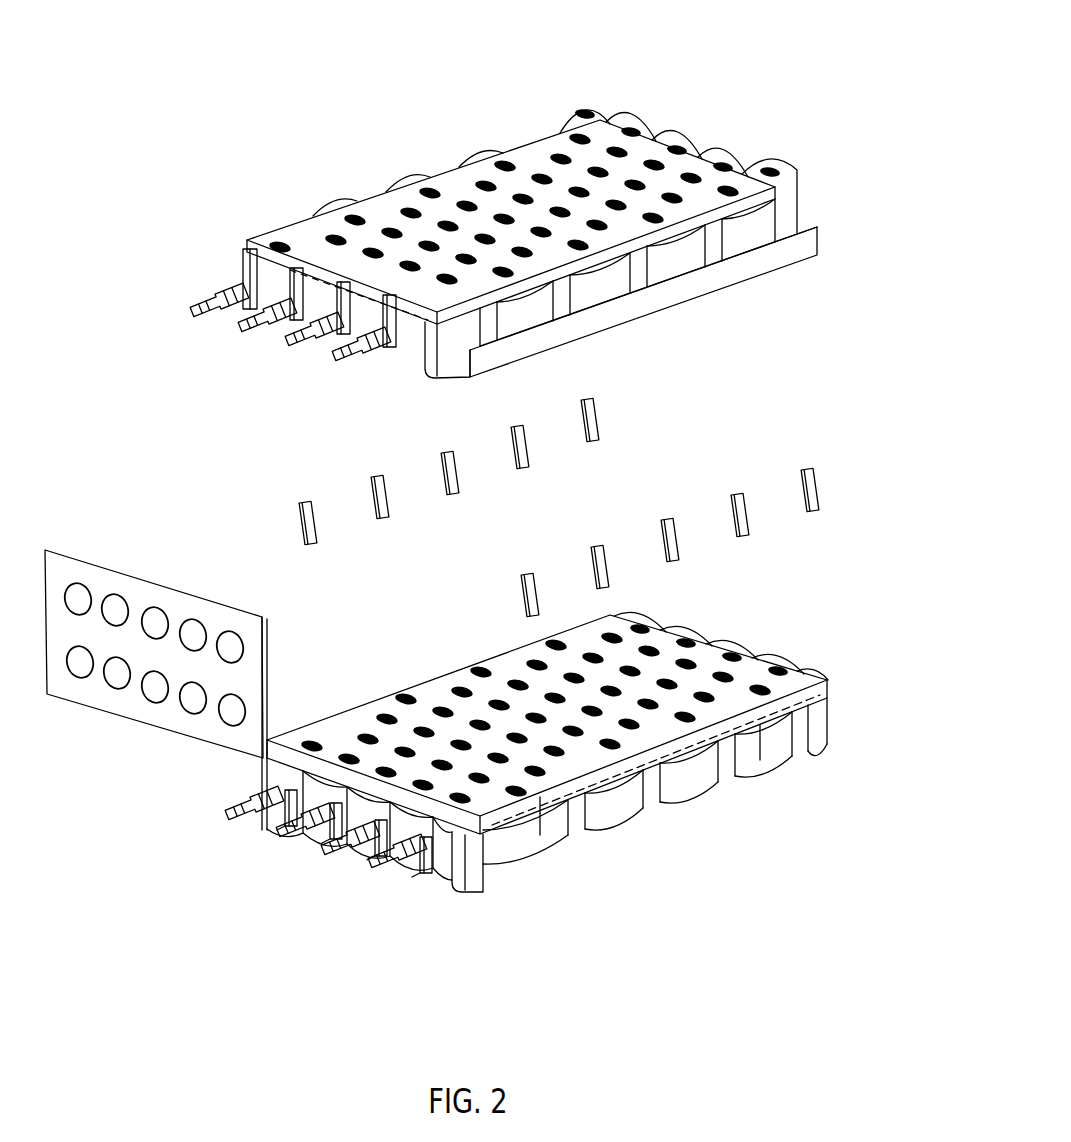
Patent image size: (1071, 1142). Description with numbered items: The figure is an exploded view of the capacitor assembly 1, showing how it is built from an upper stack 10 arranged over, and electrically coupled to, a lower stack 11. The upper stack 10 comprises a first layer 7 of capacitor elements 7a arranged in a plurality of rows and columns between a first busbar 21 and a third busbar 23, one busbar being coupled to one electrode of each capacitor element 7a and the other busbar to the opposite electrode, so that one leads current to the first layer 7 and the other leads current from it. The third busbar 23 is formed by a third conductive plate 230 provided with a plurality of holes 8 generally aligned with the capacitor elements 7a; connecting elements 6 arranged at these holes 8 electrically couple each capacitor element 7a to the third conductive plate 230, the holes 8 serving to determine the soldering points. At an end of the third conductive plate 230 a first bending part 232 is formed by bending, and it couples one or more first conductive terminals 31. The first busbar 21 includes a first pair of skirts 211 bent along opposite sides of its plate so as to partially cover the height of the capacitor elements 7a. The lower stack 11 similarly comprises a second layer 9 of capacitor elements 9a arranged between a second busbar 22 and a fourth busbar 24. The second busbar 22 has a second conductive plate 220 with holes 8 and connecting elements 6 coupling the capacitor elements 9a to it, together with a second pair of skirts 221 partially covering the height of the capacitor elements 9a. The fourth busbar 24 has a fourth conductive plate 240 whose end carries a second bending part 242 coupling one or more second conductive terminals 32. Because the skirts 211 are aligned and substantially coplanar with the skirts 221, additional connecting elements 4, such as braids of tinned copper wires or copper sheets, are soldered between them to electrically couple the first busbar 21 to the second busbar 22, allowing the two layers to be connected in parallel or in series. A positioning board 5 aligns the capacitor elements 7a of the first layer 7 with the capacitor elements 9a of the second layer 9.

The capacitor assembly 1 is at (152, 90).
The additional connecting elements 4 is at (820, 485).
The positioning board 5 is at (133, 582).
The connecting elements 6 is at (429, 190).
The first layer 7 is at (780, 160).
The capacitor elements 7a is at (645, 120).
The holes 8 is at (579, 132).
The second layer 9 is at (797, 775).
The capacitor elements 9a is at (762, 758).
The upper stack 10 is at (343, 182).
The lower stack 11 is at (846, 690).
The first busbar 21 is at (803, 262).
The second busbar 22 is at (822, 672).
The third busbar 23 is at (455, 168).
The fourth busbar 24 is at (664, 820).
The first conductive terminal 31 is at (205, 305).
The second conductive terminal 32 is at (243, 805).
The first pair of skirts 211 is at (690, 288).
The second conductive plate 220 is at (422, 690).
The second pair of skirts 221 is at (832, 708).
The third conductive plate 230 is at (388, 212).
The first bending part 232 is at (277, 262).
The fourth conductive plate 240 is at (592, 832).
The second bending part 242 is at (358, 848).